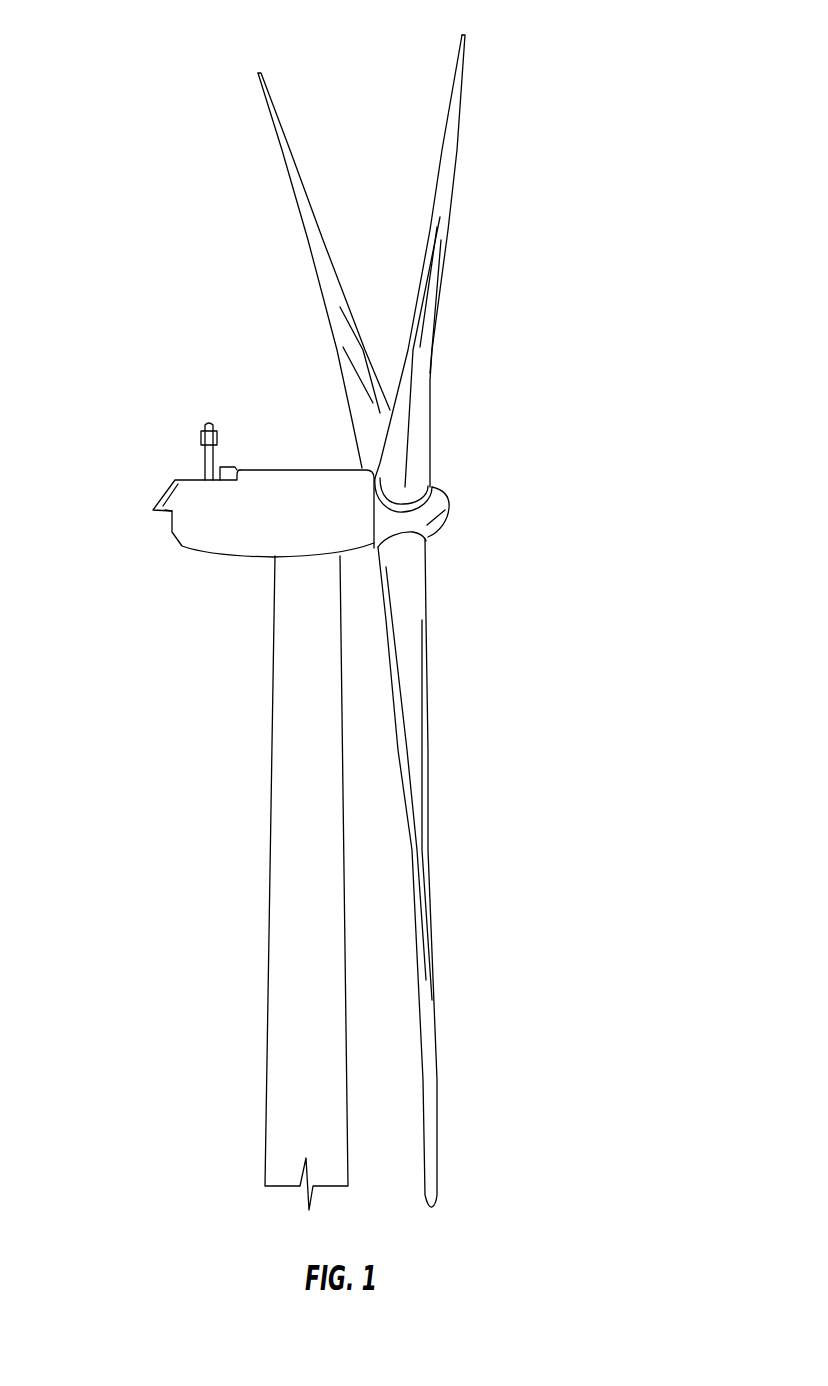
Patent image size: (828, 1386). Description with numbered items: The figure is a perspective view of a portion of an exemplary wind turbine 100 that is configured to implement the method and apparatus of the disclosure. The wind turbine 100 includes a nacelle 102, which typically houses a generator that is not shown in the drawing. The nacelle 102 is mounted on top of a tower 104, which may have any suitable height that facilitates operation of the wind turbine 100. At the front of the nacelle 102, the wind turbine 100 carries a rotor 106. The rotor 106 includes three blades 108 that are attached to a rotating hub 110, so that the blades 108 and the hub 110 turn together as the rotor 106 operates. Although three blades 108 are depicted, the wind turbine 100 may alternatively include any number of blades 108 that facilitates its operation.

The wind turbine 100 is at (163, 170).
The nacelle 102 is at (211, 562).
The tower 104 is at (271, 813).
The rotor 106 is at (563, 253).
The blades 108 is at (303, 190).
The rotating hub 110 is at (449, 500).